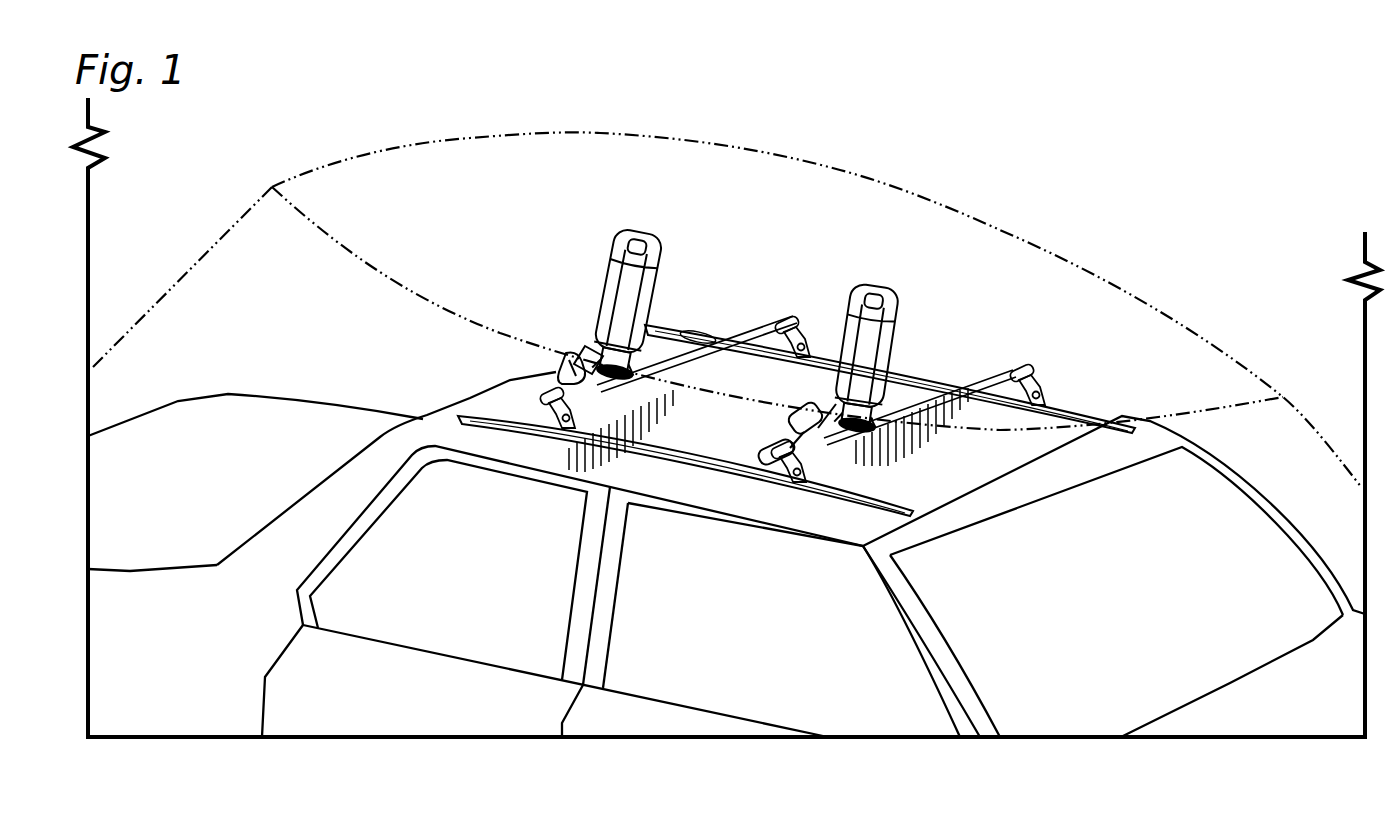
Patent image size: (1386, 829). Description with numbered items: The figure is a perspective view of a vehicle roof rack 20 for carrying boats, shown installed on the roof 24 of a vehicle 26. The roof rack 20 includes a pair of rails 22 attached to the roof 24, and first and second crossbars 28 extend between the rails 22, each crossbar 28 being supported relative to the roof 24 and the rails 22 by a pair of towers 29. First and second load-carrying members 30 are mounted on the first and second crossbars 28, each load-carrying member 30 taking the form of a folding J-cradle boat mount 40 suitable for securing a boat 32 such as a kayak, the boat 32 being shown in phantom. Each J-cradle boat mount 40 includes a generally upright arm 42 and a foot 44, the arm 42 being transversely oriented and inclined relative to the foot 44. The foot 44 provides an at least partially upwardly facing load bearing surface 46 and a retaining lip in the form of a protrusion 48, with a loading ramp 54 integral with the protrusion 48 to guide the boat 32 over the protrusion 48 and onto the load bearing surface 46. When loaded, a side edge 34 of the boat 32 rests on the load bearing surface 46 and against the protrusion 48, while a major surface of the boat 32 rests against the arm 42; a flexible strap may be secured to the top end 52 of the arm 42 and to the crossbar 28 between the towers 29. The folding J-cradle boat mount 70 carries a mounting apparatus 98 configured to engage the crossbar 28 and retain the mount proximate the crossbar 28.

The vehicle roof rack 20 is at (727, 281).
The rails 22 is at (665, 462).
The roof 24 is at (1006, 466).
The vehicle 26 is at (278, 412).
The crossbar 28 is at (770, 327).
The towers 29 is at (560, 430).
The load-carrying member 30 is at (746, 340).
The boat 32 is at (1136, 297).
The side edge 34 is at (448, 313).
The J-cradle boat mount 40 is at (731, 344).
The arm 42 is at (751, 283).
The foot 44 is at (588, 347).
The load bearing surface 46 is at (835, 410).
The protrusion 48 is at (562, 350).
The top end 52 is at (622, 225).
The loading ramp 54 is at (560, 372).
The folding J-cradle boat mount 70 is at (601, 265).
The mounting apparatus 98 is at (648, 408).